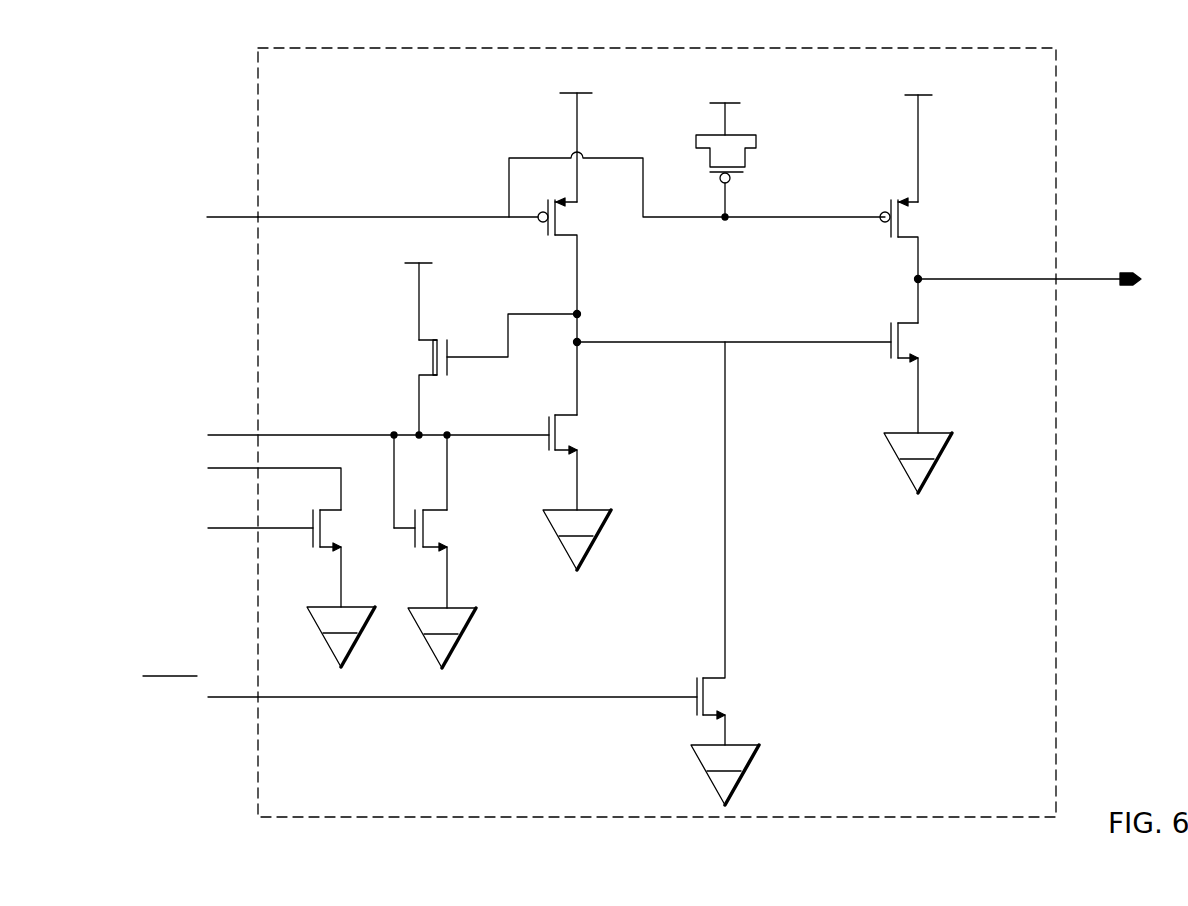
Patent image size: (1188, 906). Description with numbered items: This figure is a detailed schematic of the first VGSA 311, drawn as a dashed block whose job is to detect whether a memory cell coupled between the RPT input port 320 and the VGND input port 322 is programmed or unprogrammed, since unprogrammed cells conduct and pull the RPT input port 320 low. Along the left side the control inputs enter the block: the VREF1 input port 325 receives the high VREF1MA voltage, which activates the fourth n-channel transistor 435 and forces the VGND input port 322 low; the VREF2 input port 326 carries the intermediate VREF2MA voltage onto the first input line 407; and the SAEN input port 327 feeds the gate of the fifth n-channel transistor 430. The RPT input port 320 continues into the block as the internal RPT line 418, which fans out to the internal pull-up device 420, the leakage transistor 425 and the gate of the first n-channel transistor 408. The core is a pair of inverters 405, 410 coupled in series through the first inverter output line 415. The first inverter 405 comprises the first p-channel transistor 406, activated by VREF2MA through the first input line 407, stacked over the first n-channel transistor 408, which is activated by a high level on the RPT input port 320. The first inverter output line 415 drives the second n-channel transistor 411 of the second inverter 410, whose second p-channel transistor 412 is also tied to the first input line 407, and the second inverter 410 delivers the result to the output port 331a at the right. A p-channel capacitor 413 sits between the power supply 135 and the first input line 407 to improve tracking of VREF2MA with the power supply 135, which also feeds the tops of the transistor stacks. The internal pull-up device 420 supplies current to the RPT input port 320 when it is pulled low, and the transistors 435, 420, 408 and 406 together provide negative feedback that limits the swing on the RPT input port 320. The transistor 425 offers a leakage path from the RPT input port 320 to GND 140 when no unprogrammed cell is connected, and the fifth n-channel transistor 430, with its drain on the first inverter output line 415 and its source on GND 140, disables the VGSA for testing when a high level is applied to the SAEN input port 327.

The power supply 135 is at (584, 92).
The GND 140 is at (629, 619).
The first VGSA 311 is at (984, 703).
The RPT input port 320 is at (229, 435).
The VGND input port 322 is at (229, 472).
The VREF1 input port 325 is at (229, 532).
The VREF2 input port 326 is at (229, 215).
The SAEN input port 327 is at (228, 696).
The output port 331a is at (1100, 283).
The first inverter 405 is at (579, 312).
The first p-channel transistor 406 is at (697, 283).
The first input line 407 is at (431, 215).
The first n-channel transistor 408 is at (573, 462).
The second inverter 410 is at (920, 277).
The second n-channel transistor 411 is at (919, 378).
The second p-channel transistor 412 is at (910, 238).
The p-channel capacitor 413 is at (790, 152).
The first inverter output line 415 is at (711, 340).
The RPT line 418 is at (305, 435).
The internal pull-up device 420 is at (446, 332).
The transistor 425 is at (439, 559).
The fifth n-channel transistor 430 is at (724, 711).
The fourth n-channel transistor 435 is at (338, 558).